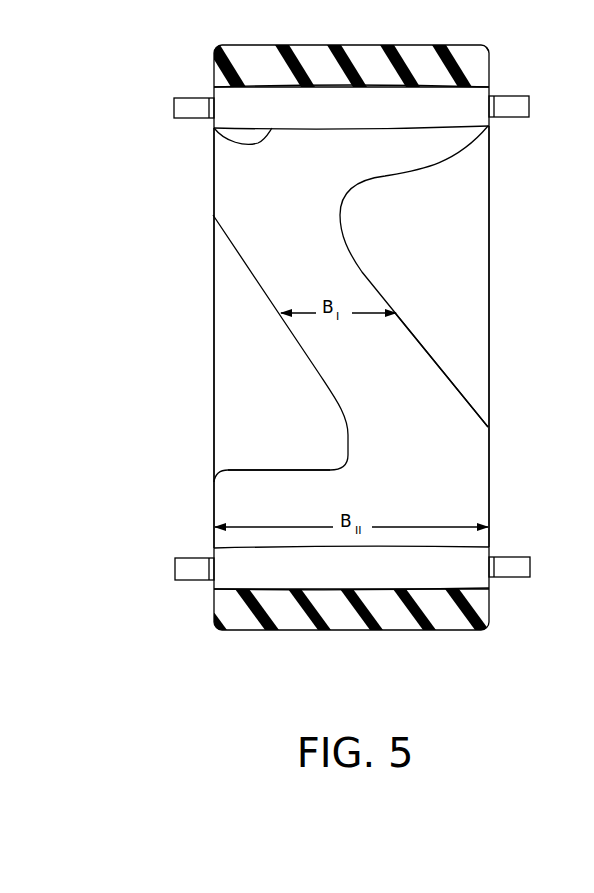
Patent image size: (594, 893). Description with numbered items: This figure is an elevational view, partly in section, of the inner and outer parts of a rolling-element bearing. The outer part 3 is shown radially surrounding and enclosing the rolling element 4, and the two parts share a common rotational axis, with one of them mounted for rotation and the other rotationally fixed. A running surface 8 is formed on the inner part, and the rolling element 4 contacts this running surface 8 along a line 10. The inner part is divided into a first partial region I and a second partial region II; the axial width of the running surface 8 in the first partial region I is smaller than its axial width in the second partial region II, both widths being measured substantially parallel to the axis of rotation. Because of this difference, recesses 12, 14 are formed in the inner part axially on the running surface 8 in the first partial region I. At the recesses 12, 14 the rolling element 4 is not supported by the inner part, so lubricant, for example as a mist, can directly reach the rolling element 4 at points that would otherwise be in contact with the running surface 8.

The outer part 3 is at (478, 66).
The rolling element 4 is at (475, 108).
The running surface 8 is at (250, 196).
The line 10 is at (250, 143).
The recess 12 is at (403, 234).
The recess 14 is at (300, 389).
The first partial region I is at (393, 376).
The second partial region II is at (252, 509).